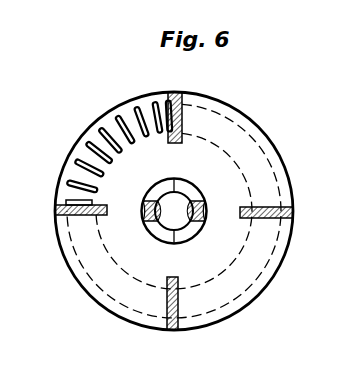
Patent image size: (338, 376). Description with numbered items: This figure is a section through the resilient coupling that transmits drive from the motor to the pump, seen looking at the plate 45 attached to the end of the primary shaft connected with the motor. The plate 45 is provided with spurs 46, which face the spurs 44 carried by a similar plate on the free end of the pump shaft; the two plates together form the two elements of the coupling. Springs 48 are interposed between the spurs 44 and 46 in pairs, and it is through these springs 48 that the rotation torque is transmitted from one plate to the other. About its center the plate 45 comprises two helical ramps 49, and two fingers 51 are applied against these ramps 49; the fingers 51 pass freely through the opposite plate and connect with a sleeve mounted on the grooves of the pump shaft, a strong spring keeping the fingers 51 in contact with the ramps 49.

The spurs 44 is at (68, 214).
The plate 45 is at (225, 262).
The spurs 46 is at (182, 102).
The springs 48 is at (93, 145).
The helical ramps 49 is at (189, 238).
The fingers 51 is at (147, 202).